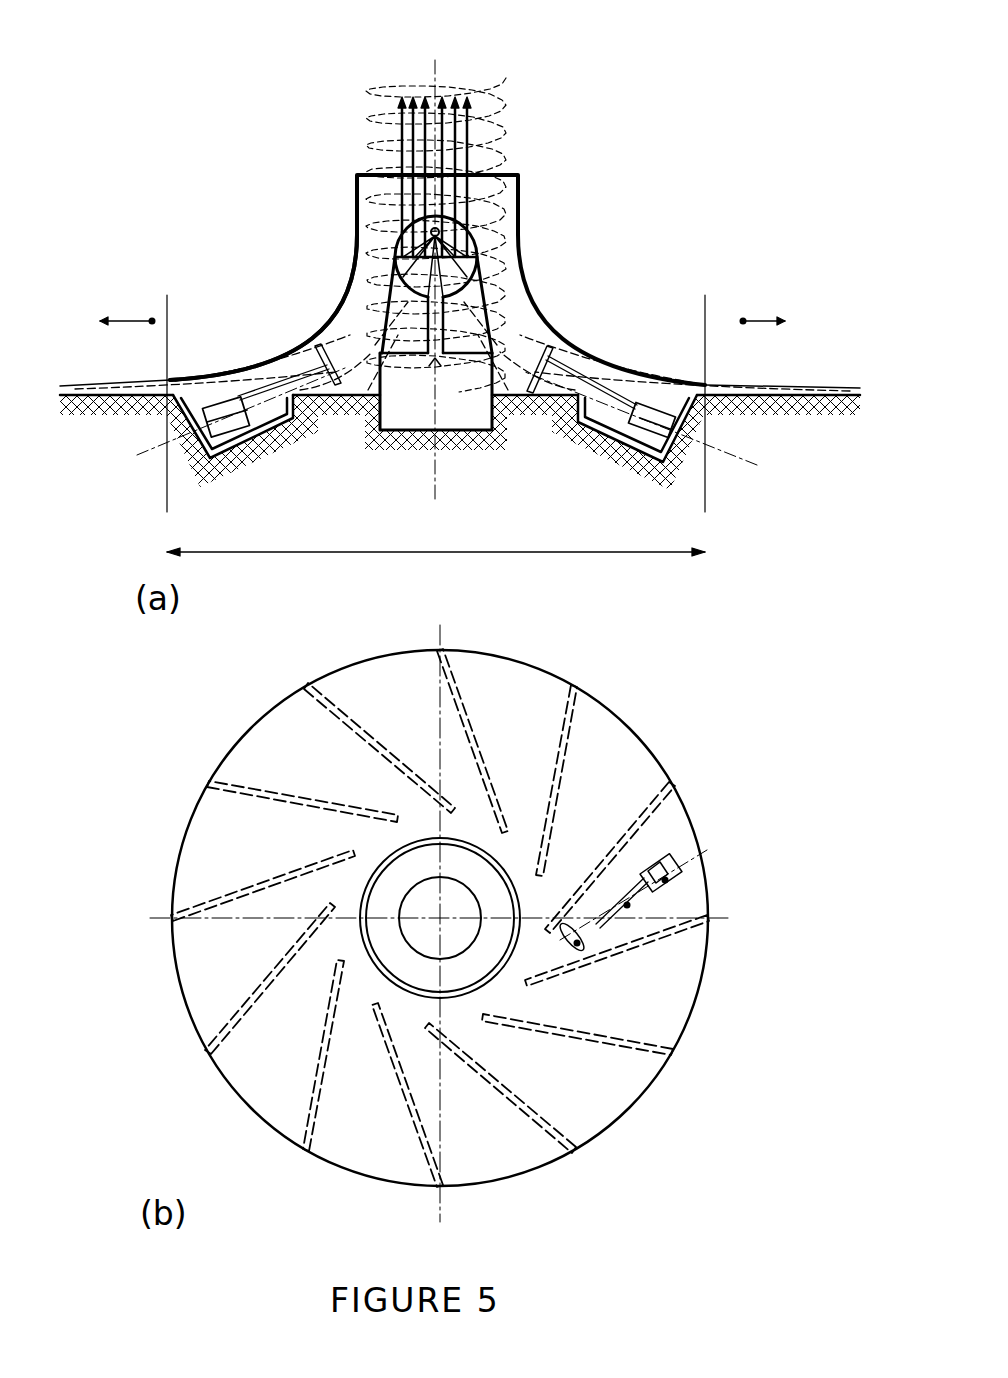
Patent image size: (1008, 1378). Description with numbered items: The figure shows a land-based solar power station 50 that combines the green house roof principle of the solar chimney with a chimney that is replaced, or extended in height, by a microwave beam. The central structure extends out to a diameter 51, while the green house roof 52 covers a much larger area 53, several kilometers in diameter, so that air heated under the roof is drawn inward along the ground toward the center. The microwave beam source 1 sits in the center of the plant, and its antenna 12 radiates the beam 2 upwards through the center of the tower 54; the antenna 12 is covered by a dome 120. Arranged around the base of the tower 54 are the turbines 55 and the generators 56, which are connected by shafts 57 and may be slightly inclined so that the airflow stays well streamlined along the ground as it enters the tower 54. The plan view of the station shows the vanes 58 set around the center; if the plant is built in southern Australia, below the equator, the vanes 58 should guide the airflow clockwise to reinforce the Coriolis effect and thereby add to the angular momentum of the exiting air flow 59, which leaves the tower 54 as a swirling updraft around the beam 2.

The microwave beam source 1 is at (398, 408).
The beam 2 is at (465, 120).
The antenna 12 is at (460, 278).
The solar power station 50 is at (285, 270).
The diameter 51 is at (436, 535).
The green house roof 52 is at (770, 386).
The area 53 is at (152, 321).
The tower 54 is at (358, 218).
The turbines 55 is at (550, 355).
The generators 56 is at (643, 412).
The shafts 57 is at (600, 398).
The vanes 58 is at (578, 725).
The exiting air flow 59 is at (489, 85).
The dome 120 is at (408, 225).